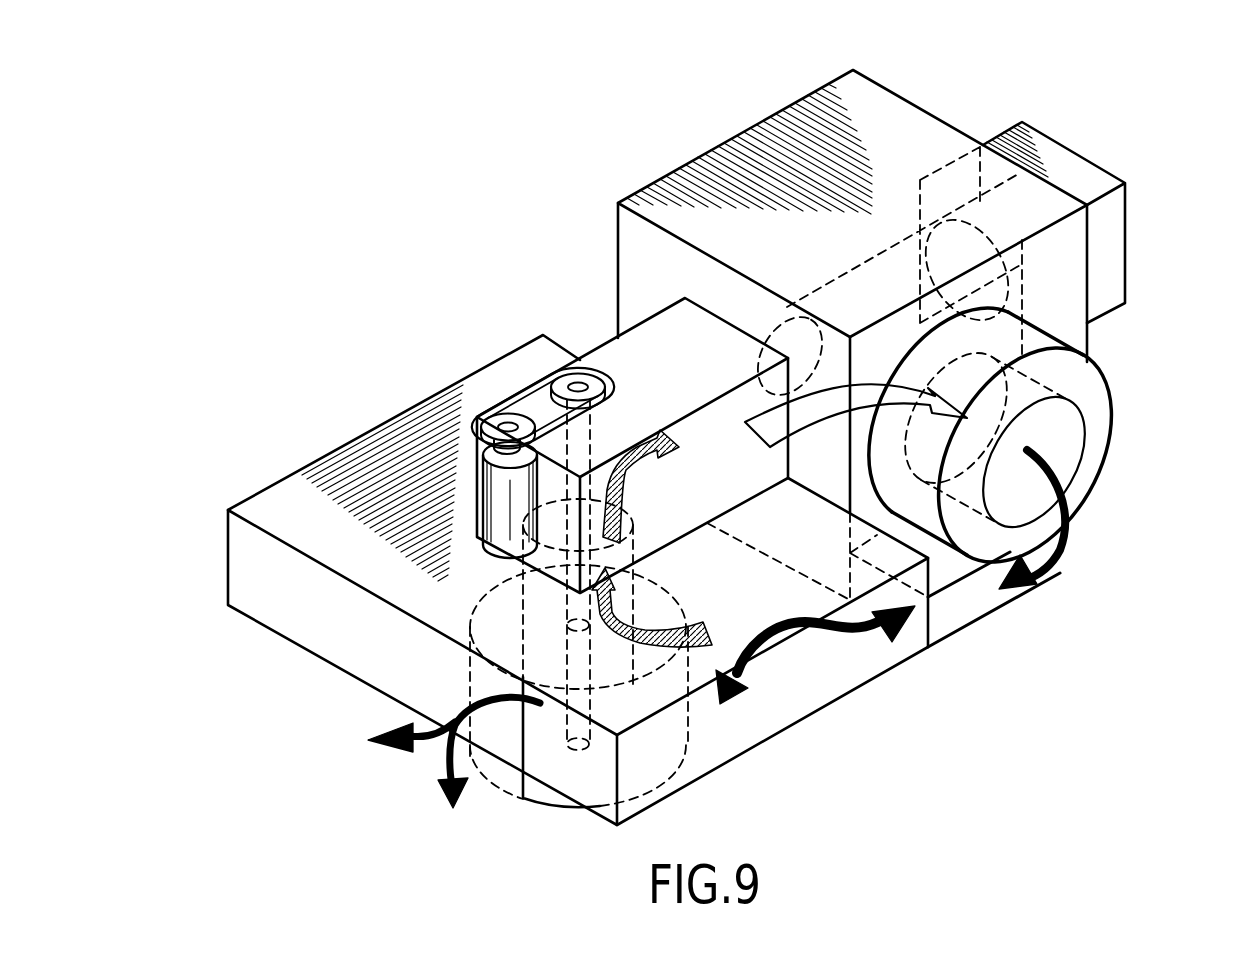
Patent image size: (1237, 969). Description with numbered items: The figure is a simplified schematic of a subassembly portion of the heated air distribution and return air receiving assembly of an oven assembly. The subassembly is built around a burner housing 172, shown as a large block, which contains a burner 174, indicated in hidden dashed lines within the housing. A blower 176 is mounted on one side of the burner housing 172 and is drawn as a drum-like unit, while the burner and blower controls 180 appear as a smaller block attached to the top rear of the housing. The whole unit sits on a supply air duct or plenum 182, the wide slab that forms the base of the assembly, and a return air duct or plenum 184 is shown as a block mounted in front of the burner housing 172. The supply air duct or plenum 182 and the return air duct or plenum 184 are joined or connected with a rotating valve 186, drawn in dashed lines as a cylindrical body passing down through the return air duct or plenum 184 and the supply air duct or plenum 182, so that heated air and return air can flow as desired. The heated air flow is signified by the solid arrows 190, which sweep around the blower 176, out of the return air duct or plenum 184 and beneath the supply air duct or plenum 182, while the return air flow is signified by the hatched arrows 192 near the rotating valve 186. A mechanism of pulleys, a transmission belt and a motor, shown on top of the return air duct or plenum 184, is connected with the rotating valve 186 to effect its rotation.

The burner housing 172 is at (650, 185).
The burner 174 is at (883, 260).
The blower 176 is at (1100, 422).
The burner and blower controls 180 is at (1070, 168).
The supply air duct or plenum 182 is at (305, 625).
The return air duct or plenum 184 is at (610, 352).
The rotating valve 186 is at (663, 765).
The arrows signifying heated air 190 is at (457, 782).
The arrows signifying return air 192 is at (650, 452).